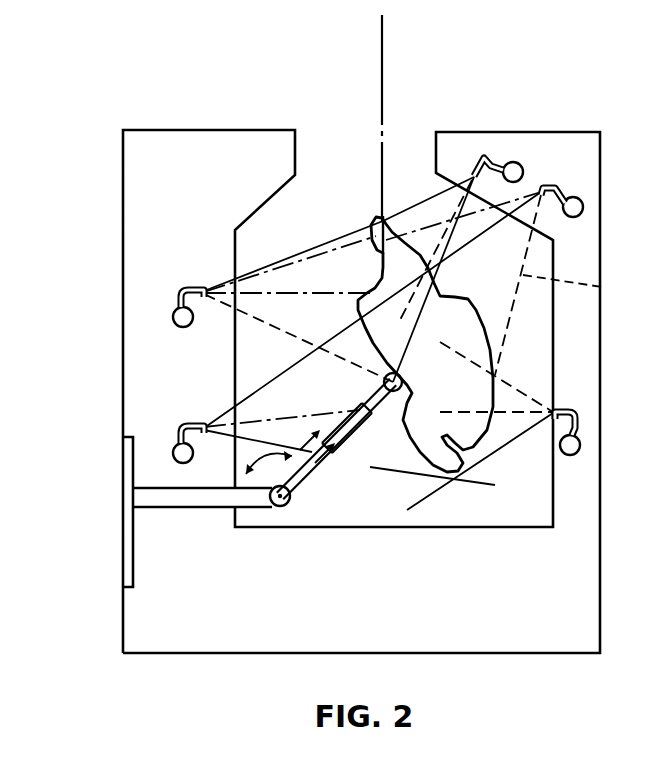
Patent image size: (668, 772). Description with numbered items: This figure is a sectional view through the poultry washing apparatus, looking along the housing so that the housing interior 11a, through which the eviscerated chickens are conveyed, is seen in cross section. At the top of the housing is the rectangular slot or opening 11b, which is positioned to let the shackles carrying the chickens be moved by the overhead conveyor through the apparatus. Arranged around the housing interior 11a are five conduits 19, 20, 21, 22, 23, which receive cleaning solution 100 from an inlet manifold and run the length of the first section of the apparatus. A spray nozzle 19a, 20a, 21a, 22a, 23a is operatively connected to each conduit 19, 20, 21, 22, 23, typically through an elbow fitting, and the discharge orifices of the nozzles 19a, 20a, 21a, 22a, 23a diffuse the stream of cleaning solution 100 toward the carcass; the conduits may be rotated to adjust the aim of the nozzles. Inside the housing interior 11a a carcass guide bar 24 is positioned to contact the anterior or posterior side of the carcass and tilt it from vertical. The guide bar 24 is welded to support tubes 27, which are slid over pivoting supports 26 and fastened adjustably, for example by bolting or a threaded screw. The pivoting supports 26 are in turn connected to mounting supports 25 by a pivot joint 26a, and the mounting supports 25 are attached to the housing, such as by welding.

The housing interior 11a is at (534, 517).
The rectangular slot or opening 11b is at (436, 152).
The conduit 19 is at (583, 209).
The spray nozzle 19a is at (557, 187).
The conduit 20 is at (580, 449).
The spray nozzle 20a is at (580, 413).
The conduit 21 is at (173, 316).
The spray nozzle 21a is at (190, 287).
The conduit 22 is at (173, 452).
The spray nozzle 22a is at (183, 424).
The conduit 23 is at (520, 165).
The spray nozzle 23a is at (484, 155).
The guide bar 24 is at (399, 374).
The mounting support 25 is at (188, 500).
The pivoting support 26 is at (310, 470).
The pivot joint 26a is at (279, 508).
The support tube 27 is at (368, 412).
The cleaning solution 100 is at (602, 287).